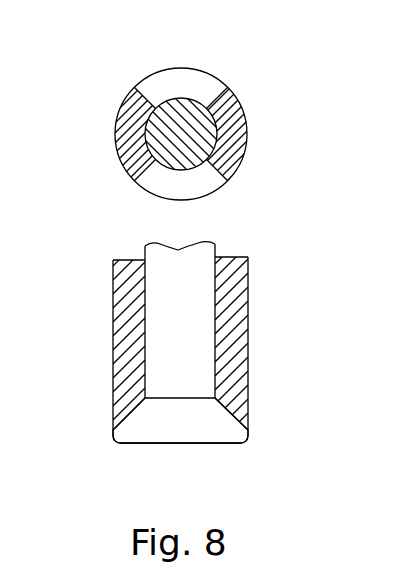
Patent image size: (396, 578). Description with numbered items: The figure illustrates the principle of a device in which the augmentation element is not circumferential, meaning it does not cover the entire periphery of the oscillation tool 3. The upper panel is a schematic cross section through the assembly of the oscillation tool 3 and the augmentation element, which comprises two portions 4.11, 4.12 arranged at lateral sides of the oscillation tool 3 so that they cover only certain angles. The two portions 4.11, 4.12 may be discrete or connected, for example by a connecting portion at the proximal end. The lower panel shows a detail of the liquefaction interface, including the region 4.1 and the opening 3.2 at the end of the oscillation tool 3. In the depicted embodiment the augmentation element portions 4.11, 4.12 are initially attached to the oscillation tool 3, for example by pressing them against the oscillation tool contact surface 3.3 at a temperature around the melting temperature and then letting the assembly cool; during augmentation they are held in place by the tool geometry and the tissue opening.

The oscillation tool 3 is at (160, 68).
The bore opening 3.2 is at (152, 432).
The oscillation tool contact surface 3.3 is at (128, 413).
The sleeve end 4.1 is at (233, 418).
The augmentation element portion 4.11 is at (127, 128).
The augmentation element portion 4.12 is at (232, 142).